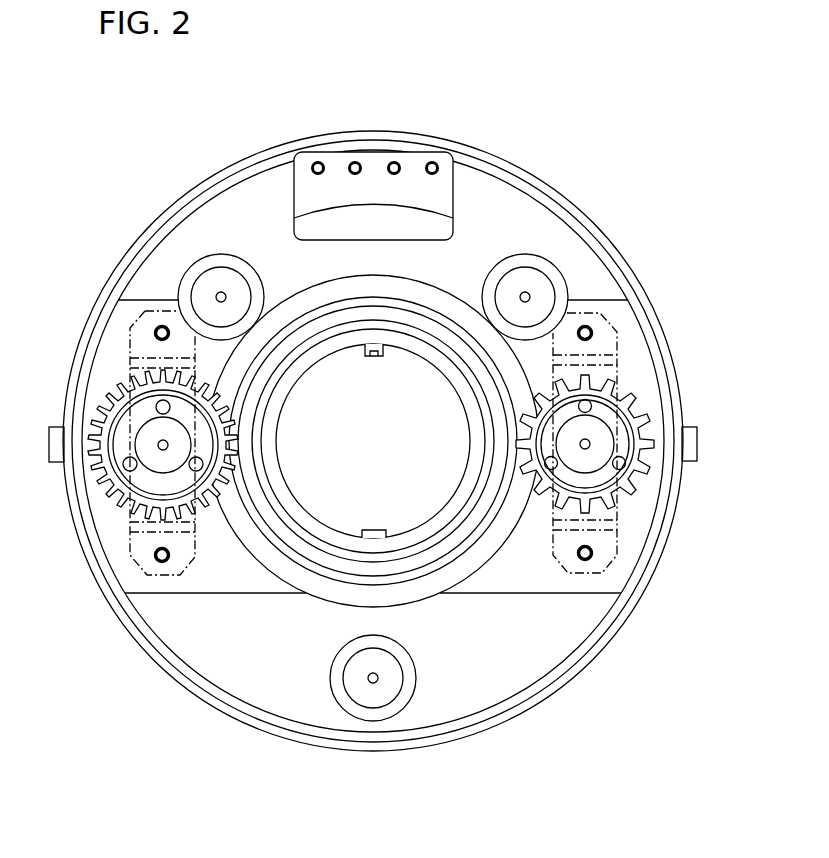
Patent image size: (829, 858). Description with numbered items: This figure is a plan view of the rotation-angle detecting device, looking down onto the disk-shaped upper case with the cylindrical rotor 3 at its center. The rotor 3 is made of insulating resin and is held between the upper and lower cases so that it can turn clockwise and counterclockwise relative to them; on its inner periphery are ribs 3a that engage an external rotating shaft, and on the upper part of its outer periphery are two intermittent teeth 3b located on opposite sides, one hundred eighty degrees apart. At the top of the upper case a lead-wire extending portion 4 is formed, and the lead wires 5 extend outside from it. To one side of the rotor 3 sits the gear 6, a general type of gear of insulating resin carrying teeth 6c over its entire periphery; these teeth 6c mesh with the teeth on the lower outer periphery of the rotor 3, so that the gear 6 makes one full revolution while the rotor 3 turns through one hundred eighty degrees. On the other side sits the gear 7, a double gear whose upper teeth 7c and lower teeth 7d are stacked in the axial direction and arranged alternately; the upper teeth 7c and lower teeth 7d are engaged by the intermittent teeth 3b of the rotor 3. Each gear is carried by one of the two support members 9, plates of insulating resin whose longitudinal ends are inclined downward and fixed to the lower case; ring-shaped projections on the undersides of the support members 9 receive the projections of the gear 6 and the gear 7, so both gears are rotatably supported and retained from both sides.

The rotor 3 is at (415, 558).
The ribs 3a is at (376, 358).
The intermittent teeth 3b is at (238, 431).
The lead-wire extending portion 4 is at (446, 200).
The lead wires 5 is at (433, 162).
The gear 6 is at (108, 394).
The teeth 6c is at (109, 492).
The gear 7 is at (657, 415).
The upper teeth 7c is at (653, 467).
The lower teeth 7d is at (633, 490).
The support members 9 is at (142, 548).